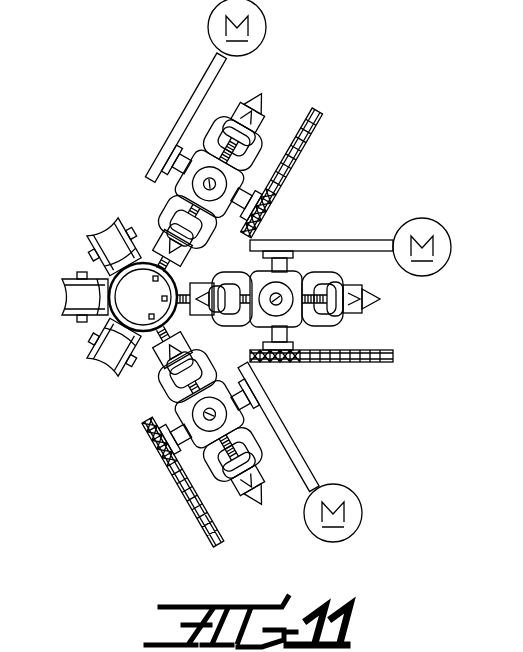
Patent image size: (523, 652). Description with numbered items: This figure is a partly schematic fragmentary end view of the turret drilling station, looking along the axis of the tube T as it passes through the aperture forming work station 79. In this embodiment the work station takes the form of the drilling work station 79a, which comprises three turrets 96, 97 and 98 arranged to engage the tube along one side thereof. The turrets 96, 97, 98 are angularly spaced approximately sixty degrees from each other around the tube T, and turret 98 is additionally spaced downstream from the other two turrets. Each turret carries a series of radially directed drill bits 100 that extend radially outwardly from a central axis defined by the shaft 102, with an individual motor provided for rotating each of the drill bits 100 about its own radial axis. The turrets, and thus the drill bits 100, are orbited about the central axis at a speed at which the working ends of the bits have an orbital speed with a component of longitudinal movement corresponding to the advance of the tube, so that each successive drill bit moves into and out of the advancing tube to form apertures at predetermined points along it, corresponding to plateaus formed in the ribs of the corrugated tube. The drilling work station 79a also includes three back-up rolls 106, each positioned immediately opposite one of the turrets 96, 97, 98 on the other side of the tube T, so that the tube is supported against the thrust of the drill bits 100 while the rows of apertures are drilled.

The aperture forming work station 79 is at (240, 274).
The drilling work station 79a is at (298, 365).
The turret 96 is at (180, 204).
The turret 97 is at (330, 278).
The turret 98 is at (167, 385).
The drill bits 100 is at (268, 93).
The shaft 102 is at (170, 160).
The back-up rolls 106 is at (78, 285).
The tube T is at (107, 367).